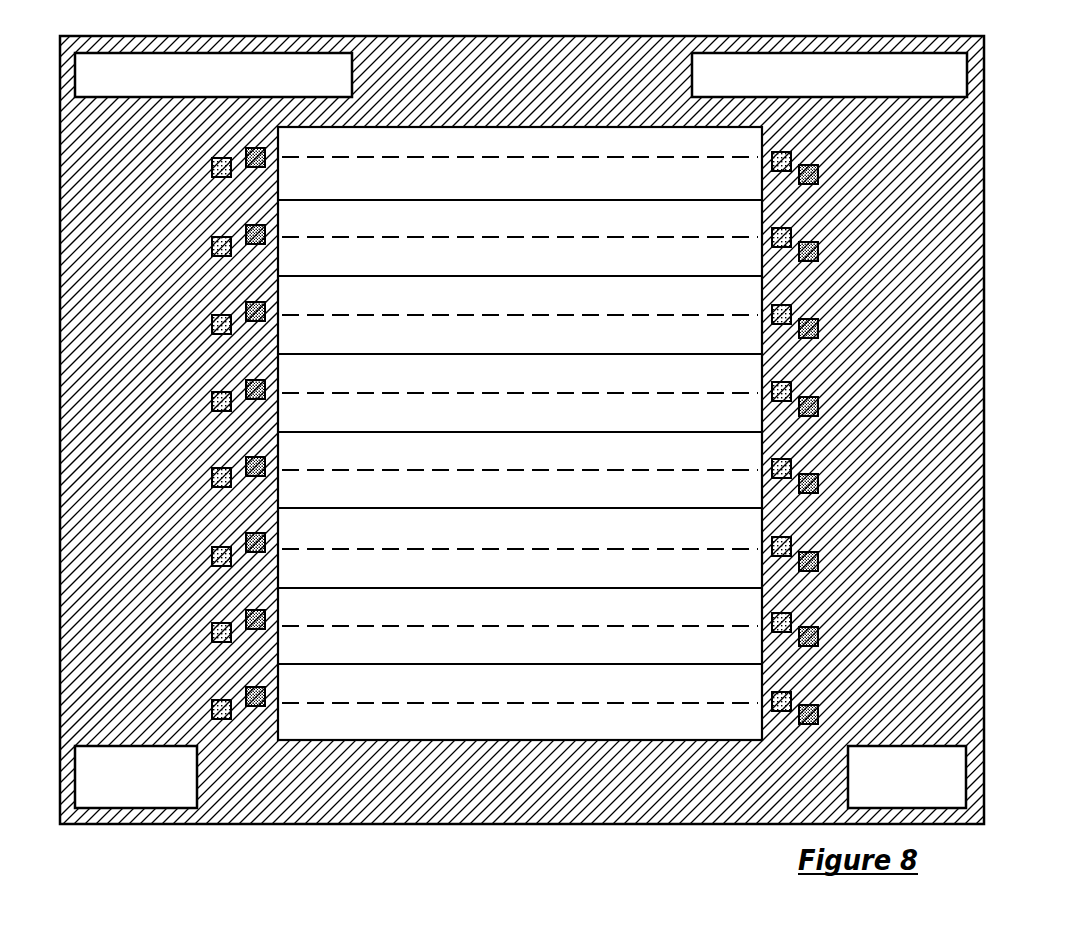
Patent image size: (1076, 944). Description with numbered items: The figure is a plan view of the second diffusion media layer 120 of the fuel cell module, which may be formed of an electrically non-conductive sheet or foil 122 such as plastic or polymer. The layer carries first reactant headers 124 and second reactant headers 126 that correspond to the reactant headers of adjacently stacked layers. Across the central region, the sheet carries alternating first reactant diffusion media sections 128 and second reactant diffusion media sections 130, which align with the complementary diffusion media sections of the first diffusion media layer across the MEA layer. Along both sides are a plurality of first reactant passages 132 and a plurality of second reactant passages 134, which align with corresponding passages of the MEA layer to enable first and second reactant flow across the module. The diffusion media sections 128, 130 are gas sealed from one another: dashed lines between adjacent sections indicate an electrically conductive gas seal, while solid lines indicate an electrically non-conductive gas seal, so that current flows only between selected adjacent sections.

The second diffusion media layer 120 is at (991, 137).
The electrically non-conductive sheet or foil 122 is at (974, 272).
The first reactant headers 124 is at (122, 788).
The second reactant headers 126 is at (99, 88).
The first reactant diffusion media sections 128 is at (506, 188).
The second reactant diffusion media sections 130 is at (506, 150).
The first reactant passages 132 is at (263, 232).
The second reactant passages 134 is at (215, 243).